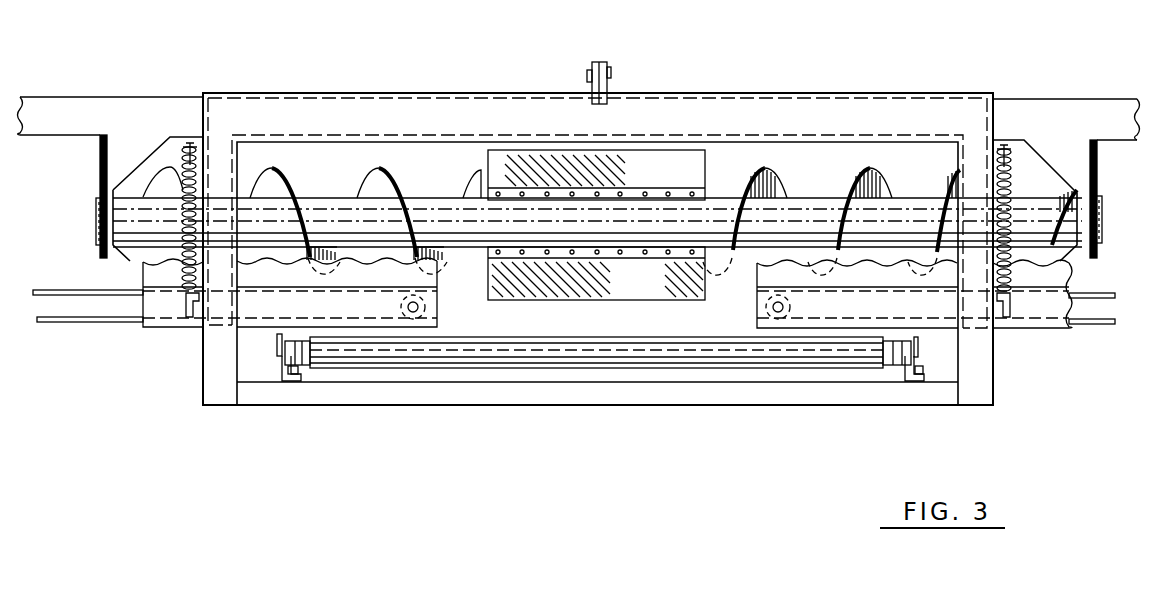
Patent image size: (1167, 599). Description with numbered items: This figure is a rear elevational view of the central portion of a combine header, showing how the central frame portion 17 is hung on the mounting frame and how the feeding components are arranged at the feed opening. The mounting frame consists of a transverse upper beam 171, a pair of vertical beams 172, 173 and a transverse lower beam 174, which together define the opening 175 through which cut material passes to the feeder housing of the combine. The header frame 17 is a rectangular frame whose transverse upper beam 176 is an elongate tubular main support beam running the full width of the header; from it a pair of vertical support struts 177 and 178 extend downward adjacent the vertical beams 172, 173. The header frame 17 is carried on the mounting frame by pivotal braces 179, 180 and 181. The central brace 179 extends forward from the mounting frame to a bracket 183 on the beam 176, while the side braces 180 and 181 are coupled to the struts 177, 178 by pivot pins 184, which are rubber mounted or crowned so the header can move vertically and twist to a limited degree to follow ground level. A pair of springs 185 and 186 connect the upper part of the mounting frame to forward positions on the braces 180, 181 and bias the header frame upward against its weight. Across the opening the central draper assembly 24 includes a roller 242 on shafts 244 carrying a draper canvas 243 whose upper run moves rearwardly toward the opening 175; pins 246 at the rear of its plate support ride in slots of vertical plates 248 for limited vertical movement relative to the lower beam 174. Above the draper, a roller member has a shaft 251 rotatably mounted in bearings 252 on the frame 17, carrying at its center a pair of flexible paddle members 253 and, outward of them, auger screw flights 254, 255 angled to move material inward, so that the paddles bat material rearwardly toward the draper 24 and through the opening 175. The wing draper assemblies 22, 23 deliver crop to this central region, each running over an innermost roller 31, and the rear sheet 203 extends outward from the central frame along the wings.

The central frame portion 17 is at (852, 112).
The draper assembly 22 is at (75, 278).
The draper assembly 23 is at (1080, 290).
The draper assembly 24 is at (611, 375).
The roller 31 is at (425, 305).
The transverse upper beam 171 is at (465, 108).
The vertical beam 172 is at (215, 345).
The vertical beam 173 is at (985, 370).
The transverse lower beam 174 is at (590, 393).
The opening 175 is at (810, 167).
The transverse upper beam 176 is at (95, 112).
The vertical support strut 177 is at (228, 182).
The vertical support strut 178 is at (975, 160).
The pivotal brace 179 is at (613, 65).
The pivotal brace 180 is at (190, 318).
The pivotal brace 181 is at (1000, 320).
The bracket 183 is at (607, 68).
The pivot pin 184 is at (612, 77).
The spring 185 is at (176, 166).
The spring 186 is at (1018, 175).
The rear sheet 203 is at (151, 275).
The roller 242 is at (890, 362).
The draper canvas 243 is at (575, 337).
The shaft 244 is at (283, 352).
The pin 246 is at (276, 348).
The vertical plate 248 is at (290, 368).
The shaft 251 is at (338, 215).
The bearing 252 is at (96, 194).
The flexible paddle member 253 is at (688, 172).
The auger screw flight 254 is at (373, 185).
The auger screw flight 255 is at (870, 178).